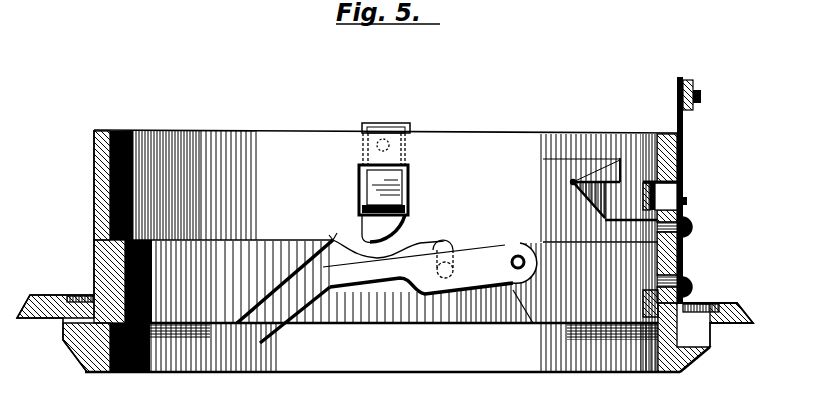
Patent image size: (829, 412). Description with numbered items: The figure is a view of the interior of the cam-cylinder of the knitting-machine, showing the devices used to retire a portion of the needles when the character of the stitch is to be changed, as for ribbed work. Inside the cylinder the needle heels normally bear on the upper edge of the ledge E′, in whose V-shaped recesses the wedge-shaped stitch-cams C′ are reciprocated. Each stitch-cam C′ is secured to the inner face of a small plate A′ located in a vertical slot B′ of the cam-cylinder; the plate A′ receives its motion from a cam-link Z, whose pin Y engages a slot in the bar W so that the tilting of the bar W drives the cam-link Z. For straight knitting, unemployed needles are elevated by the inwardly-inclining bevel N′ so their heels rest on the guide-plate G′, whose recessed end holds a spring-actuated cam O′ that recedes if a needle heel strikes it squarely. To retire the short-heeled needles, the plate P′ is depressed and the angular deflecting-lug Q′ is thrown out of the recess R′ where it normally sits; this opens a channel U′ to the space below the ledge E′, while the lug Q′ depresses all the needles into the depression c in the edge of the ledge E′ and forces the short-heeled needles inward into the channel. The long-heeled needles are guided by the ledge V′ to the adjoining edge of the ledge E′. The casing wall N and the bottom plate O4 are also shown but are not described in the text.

The casing side wall N is at (94, 213).
The ledge E′ is at (241, 282).
The bottom plate O4 is at (382, 347).
The channel U′ is at (285, 291).
The ledge V′ is at (338, 229).
The depression c is at (389, 249).
The plate P′ is at (430, 281).
The angular deflecting-lug Q′ is at (398, 221).
The recess R′ is at (408, 188).
The guide-plate G′ is at (620, 162).
The spring-actuated cam O′ is at (573, 183).
The inwardly-inclining bevel N′ is at (618, 158).
The vertical slot B′ is at (678, 189).
The small plate A′ is at (677, 252).
The wedge-shaped stitch-cam C′ is at (657, 268).
The cam-link Z is at (683, 141).
The bar W is at (693, 86).
The pin Y is at (701, 97).